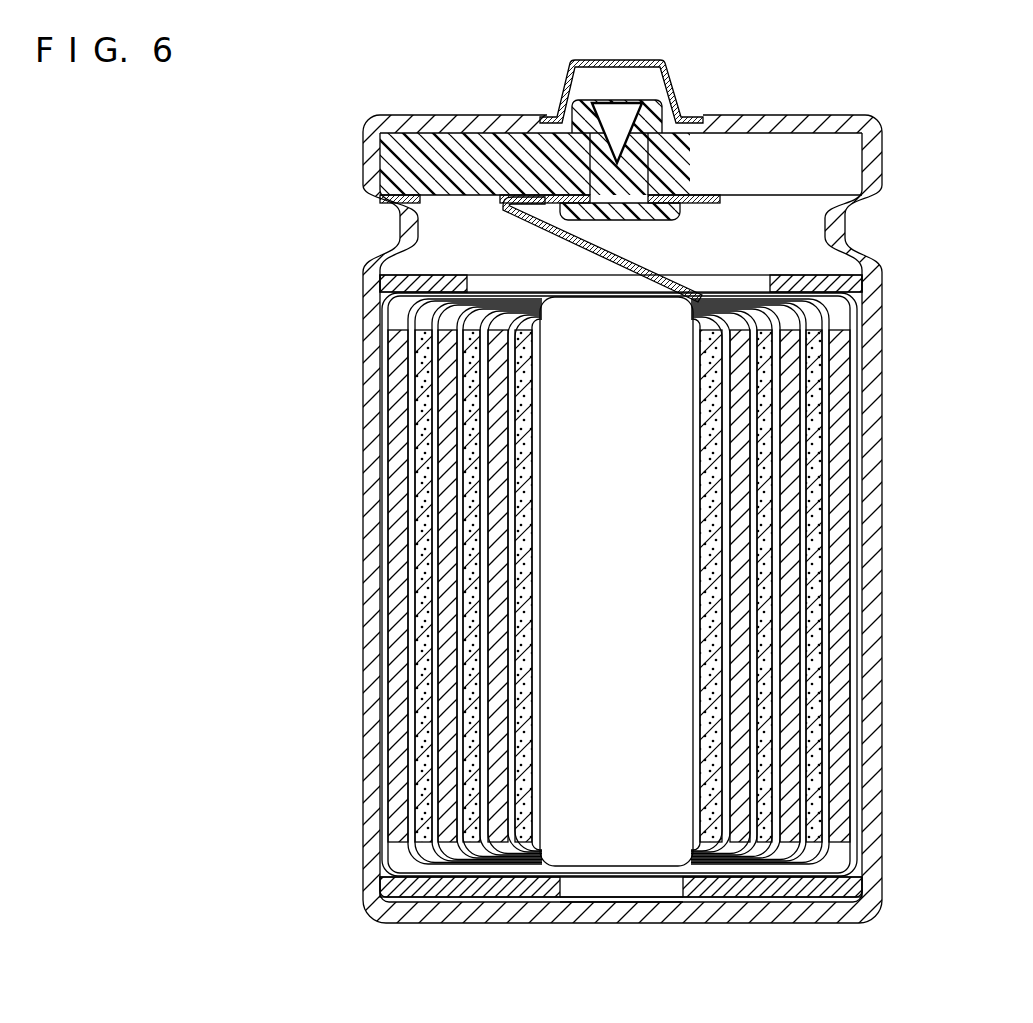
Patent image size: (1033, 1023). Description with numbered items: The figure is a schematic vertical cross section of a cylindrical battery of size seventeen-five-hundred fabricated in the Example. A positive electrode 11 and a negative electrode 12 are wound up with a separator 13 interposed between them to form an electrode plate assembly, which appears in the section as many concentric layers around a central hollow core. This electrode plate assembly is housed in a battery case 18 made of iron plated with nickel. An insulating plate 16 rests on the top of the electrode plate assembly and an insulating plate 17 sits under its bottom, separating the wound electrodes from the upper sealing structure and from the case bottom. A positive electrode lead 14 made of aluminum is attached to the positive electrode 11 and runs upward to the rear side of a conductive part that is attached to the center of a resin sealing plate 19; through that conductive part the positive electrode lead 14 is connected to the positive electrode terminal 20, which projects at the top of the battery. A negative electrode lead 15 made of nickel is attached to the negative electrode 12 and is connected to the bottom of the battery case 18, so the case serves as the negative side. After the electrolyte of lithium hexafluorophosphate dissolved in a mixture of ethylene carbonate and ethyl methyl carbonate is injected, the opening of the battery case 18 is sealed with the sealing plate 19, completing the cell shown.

The positive electrode 11 is at (815, 677).
The negative electrode 12 is at (832, 600).
The separator 13 is at (845, 504).
The positive electrode lead 14 is at (645, 266).
The negative electrode lead 15 is at (653, 897).
The insulating plate 16 is at (842, 280).
The insulating plate 17 is at (852, 888).
The battery case 18 is at (372, 430).
The sealing plate 19 is at (395, 151).
The positive electrode terminal 20 is at (632, 62).